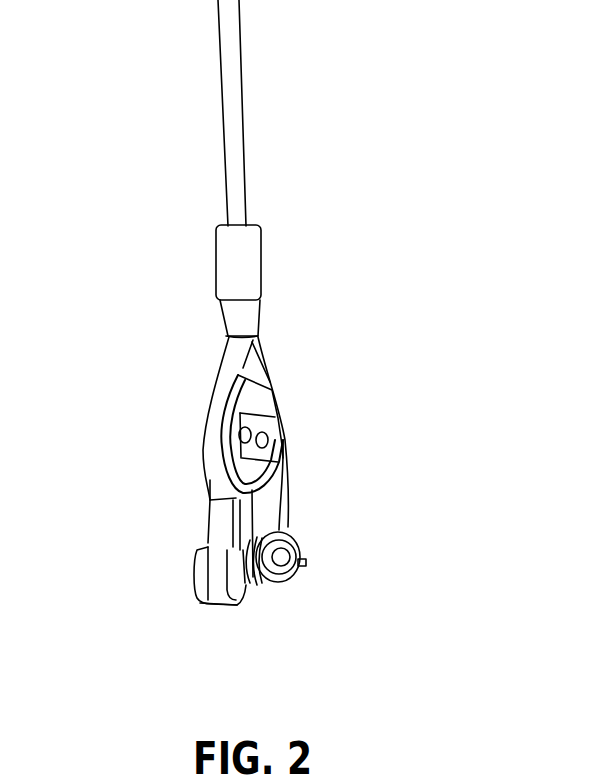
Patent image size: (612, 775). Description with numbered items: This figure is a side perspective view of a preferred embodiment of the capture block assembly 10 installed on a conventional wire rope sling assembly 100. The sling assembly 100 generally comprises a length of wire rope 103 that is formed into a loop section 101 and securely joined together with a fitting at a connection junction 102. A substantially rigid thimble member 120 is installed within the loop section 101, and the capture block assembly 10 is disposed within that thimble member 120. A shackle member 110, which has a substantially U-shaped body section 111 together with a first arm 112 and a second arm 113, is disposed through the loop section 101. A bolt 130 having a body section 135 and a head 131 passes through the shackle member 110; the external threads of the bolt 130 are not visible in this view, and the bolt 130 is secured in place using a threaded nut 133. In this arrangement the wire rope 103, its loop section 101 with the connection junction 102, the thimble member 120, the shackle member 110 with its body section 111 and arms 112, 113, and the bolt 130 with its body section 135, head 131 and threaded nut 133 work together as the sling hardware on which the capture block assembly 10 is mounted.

The wire rope sling assembly 100 is at (207, 403).
The loop section 101 is at (215, 468).
The connection junction 102 is at (248, 316).
The wire rope 103 is at (233, 84).
The capture block assembly 10 is at (283, 417).
The shackle member 110 is at (290, 507).
The U-shaped body section 111 is at (287, 463).
The first arm 112 is at (225, 544).
The second arm 113 is at (270, 533).
The thimble member 120 is at (277, 382).
The bolt 130 is at (304, 562).
The head 131 is at (197, 597).
The threaded nut 133 is at (297, 582).
The body section 135 is at (242, 600).